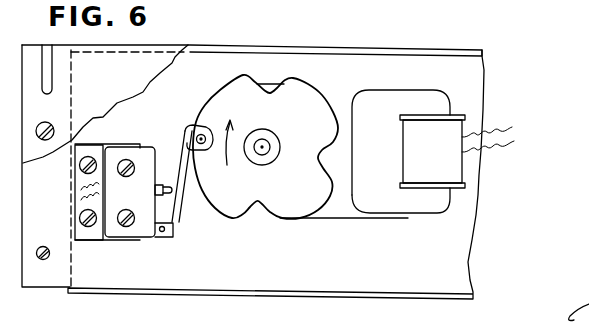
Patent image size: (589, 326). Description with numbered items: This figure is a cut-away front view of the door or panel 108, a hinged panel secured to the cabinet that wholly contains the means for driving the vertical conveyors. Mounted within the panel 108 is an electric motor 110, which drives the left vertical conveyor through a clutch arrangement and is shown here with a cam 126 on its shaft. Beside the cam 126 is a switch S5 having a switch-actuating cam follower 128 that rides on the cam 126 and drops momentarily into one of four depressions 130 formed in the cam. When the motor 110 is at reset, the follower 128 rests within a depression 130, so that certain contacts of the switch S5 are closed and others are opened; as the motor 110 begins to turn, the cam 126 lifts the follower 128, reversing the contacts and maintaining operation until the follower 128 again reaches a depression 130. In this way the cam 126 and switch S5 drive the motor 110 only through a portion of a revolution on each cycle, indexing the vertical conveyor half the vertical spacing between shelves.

The door or panel 108 is at (422, 268).
The electric motor 110 is at (351, 91).
The cam 126 is at (294, 84).
The switch-actuating cam follower 128 is at (193, 146).
The depressions 130 is at (268, 92).
The switch S5 is at (143, 232).